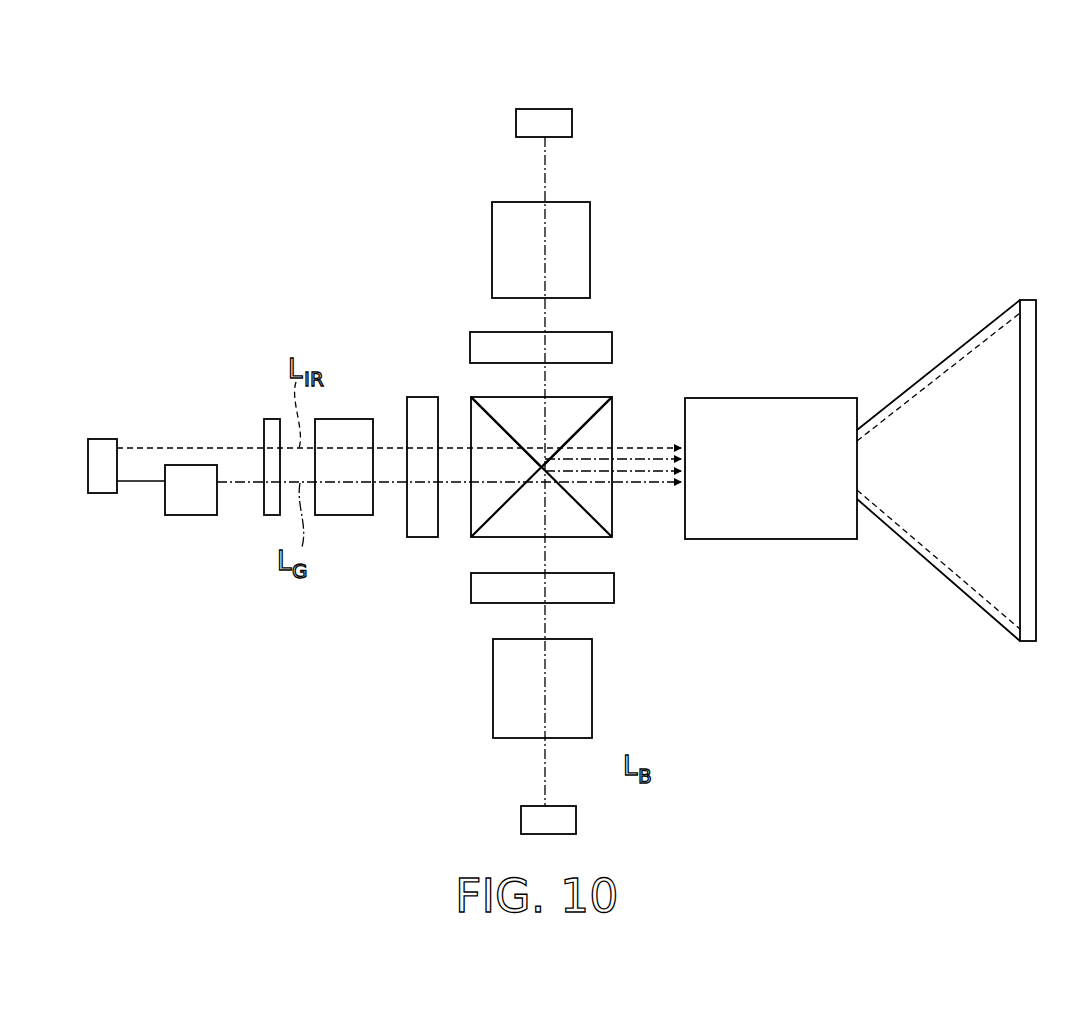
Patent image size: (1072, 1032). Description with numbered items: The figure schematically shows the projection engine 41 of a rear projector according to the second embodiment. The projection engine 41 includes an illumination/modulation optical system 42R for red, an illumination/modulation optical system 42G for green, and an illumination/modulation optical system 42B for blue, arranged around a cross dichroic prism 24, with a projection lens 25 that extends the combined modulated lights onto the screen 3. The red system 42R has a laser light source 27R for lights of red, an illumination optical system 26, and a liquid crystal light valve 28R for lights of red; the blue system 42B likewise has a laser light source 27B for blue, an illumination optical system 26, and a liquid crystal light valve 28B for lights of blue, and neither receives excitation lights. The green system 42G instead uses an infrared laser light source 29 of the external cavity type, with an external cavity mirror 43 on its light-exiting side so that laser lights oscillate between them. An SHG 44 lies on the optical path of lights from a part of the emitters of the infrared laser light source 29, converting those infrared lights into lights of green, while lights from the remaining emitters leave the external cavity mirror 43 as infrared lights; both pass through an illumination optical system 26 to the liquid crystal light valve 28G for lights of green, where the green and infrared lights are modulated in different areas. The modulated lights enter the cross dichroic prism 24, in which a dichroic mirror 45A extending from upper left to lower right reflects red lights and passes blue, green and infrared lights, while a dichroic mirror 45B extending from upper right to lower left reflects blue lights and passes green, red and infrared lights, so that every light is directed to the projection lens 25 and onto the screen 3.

The projection engine 41 is at (577, 85).
The laser light source for lights of red 27R is at (562, 122).
The illumination optical system 26 is at (582, 252).
The liquid crystal light valve for lights of red 28R is at (600, 346).
The illumination/modulation optical system for color of red 42R is at (730, 106).
The cross dichroic prism 24 is at (602, 490).
The dichroic mirror 45A is at (470, 407).
The dichroic mirror 45B is at (600, 418).
The projection lens 25 is at (785, 407).
The screen 3 is at (1028, 302).
The liquid crystal light valve for lights of blue 28B is at (604, 587).
The laser light source for color of blue 27B is at (576, 820).
The illumination/modulation optical system for color of blue 42B is at (733, 564).
The infrared laser light source 29 is at (105, 493).
The SHG 44 is at (190, 512).
The external cavity mirror 43 is at (272, 512).
The liquid crystal light valve for lights of green 28G is at (423, 530).
The illumination/modulation optical system for color of green 42G is at (462, 637).